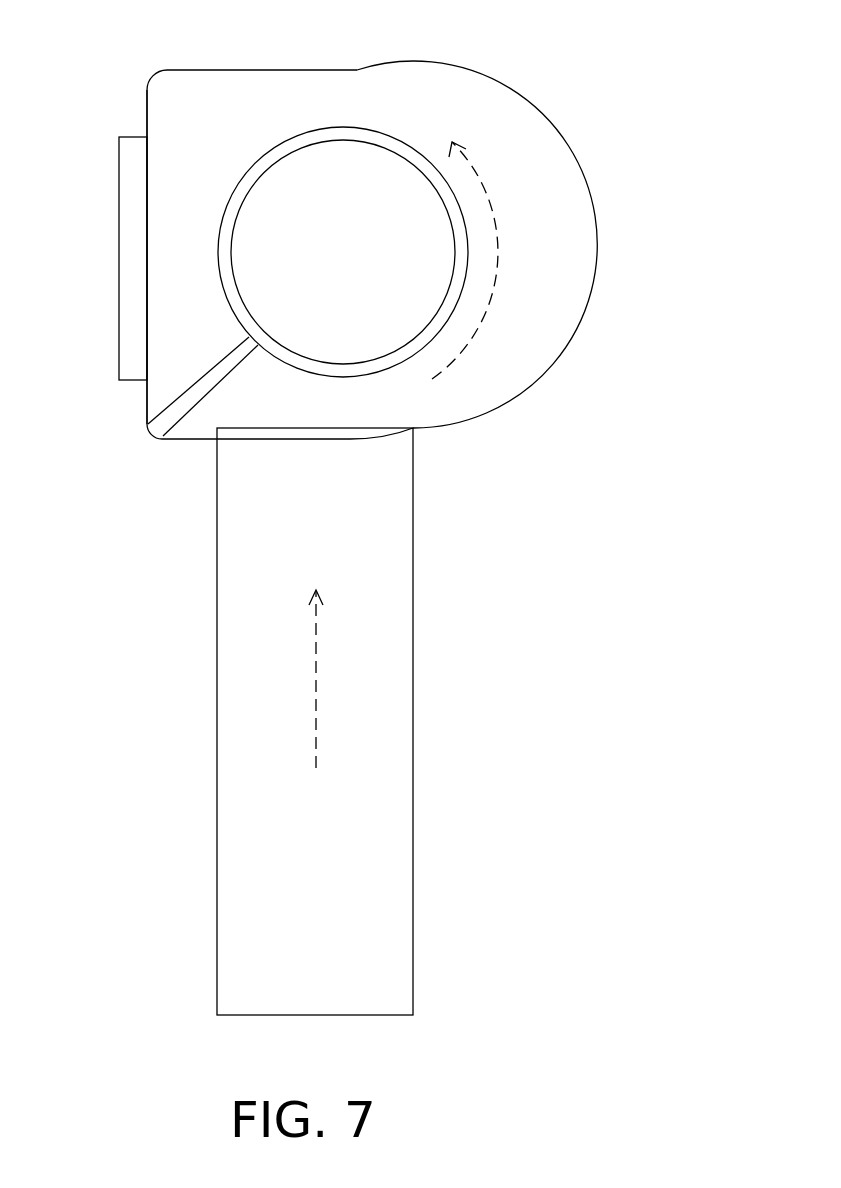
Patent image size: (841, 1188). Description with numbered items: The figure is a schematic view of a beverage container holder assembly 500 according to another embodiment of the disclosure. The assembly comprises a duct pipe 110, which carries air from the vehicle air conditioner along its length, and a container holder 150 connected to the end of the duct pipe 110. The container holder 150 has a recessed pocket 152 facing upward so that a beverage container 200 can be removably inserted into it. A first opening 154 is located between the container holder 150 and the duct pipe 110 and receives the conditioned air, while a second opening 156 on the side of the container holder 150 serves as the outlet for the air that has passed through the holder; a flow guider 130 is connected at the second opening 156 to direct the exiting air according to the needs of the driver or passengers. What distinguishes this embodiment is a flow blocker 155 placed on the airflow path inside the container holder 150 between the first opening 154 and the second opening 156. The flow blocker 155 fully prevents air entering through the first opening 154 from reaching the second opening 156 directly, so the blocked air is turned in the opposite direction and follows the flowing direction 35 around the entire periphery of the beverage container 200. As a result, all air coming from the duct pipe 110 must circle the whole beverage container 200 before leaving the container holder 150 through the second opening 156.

The duct pipe 110 is at (405, 795).
The flow guider 130 is at (133, 300).
The container holder 150 is at (517, 174).
The recessed pocket 152 is at (368, 131).
The first opening 154 is at (353, 432).
The flow blocker 155 is at (200, 378).
The second opening 156 is at (145, 185).
The beverage container 200 is at (399, 170).
The flowing direction 35 is at (480, 327).
The beverage container holder assembly 500 is at (486, 1066).